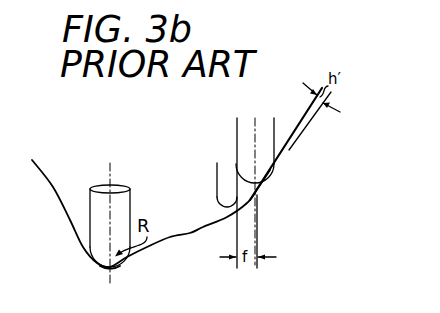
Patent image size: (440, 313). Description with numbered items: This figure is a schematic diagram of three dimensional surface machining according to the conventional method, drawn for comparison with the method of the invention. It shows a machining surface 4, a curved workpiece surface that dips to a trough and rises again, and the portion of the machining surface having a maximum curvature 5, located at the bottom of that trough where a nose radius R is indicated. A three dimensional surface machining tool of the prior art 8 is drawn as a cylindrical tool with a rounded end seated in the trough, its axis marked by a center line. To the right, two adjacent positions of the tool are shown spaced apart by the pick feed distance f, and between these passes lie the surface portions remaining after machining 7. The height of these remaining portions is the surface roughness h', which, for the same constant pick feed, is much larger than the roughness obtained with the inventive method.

The machining surface 4 is at (167, 243).
The portion of the machining surface having a maximum curvature 5 is at (113, 268).
The surface portions remaining after machining 7 is at (260, 188).
The three dimensional surface machining tool of the prior art 8 is at (100, 207).